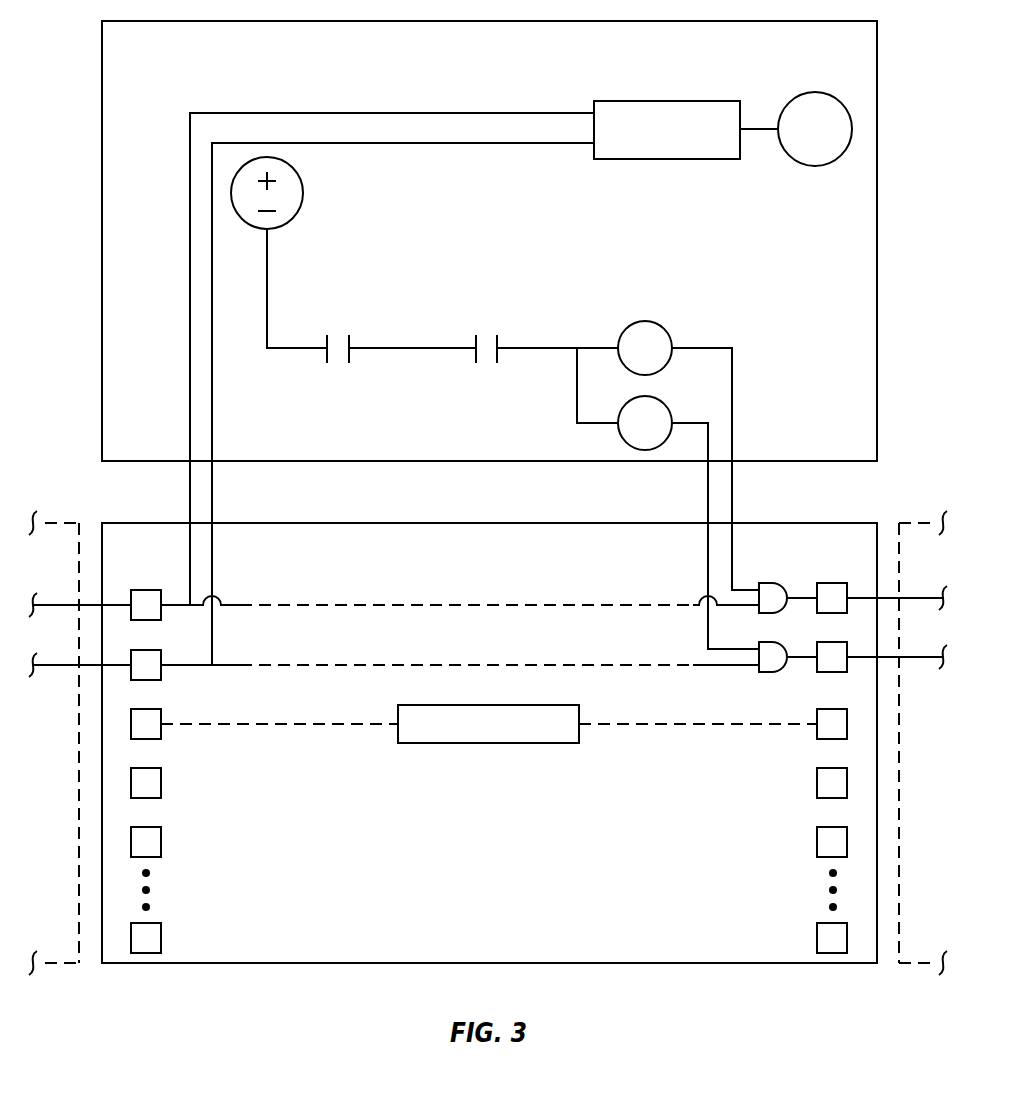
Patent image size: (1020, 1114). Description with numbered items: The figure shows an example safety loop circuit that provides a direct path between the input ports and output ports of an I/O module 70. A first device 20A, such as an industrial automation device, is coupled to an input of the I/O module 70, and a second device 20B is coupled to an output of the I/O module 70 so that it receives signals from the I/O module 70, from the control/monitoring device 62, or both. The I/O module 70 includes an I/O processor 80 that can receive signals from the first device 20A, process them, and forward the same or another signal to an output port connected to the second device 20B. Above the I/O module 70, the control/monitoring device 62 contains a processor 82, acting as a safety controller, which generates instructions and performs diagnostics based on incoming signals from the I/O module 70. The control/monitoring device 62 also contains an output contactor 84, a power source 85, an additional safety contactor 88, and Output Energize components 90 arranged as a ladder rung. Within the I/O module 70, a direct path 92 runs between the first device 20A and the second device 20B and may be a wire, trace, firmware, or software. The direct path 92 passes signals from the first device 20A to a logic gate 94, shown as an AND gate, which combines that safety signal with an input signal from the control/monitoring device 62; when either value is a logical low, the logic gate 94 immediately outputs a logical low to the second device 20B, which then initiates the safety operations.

The control/monitoring device 62 is at (490, 21).
The processor 82 is at (667, 101).
The output contactor 84 is at (826, 95).
The power source 85 is at (303, 193).
The additional safety contactor 88 is at (487, 357).
The Output Energize component (OTE) 90 is at (664, 326).
The I/O module 70 is at (487, 523).
The I/O processor 80 is at (488, 743).
The direct path 92 is at (465, 605).
The logic gate 94 is at (766, 613).
The first device 20A is at (50, 523).
The second device 20B is at (930, 522).